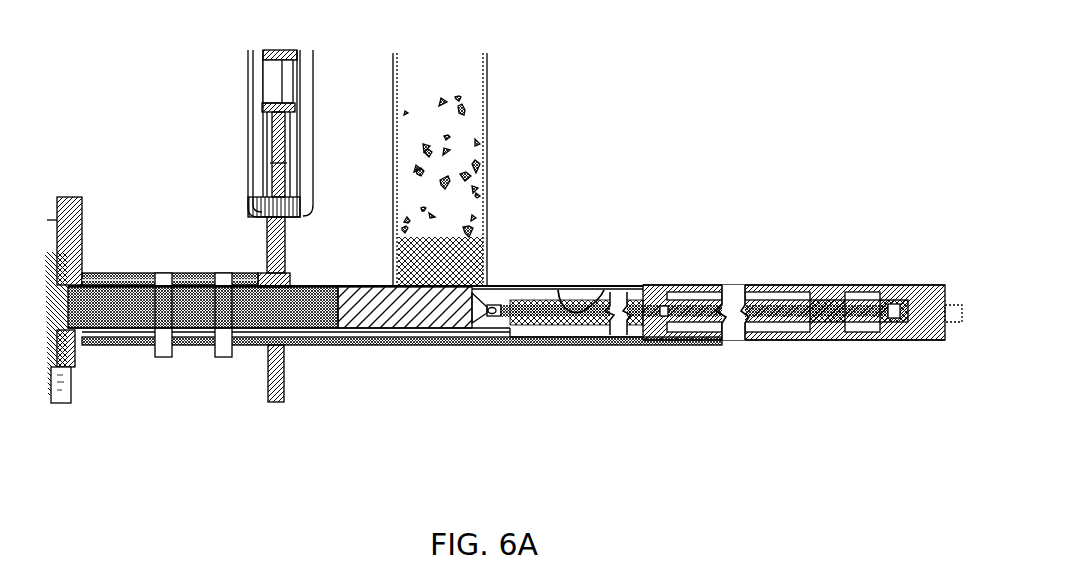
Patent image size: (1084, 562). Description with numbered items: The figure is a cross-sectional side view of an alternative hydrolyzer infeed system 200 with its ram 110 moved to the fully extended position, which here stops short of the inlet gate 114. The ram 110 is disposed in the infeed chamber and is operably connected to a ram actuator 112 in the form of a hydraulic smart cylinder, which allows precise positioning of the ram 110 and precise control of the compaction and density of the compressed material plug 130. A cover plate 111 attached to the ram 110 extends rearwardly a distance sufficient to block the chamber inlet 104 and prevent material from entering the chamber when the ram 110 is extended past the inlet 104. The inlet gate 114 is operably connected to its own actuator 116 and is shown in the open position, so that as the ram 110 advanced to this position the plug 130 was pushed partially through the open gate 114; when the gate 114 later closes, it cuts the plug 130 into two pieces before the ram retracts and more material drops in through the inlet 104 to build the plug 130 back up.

The infeed system 200 is at (713, 34).
The chamber inlet 104 is at (488, 277).
The ram 110 is at (363, 302).
The cover plate 111 is at (597, 299).
The ram actuator 112 is at (702, 267).
The inlet gate 114 is at (273, 193).
The gate actuator 116 is at (267, 88).
The compressed material plug 130 is at (268, 305).